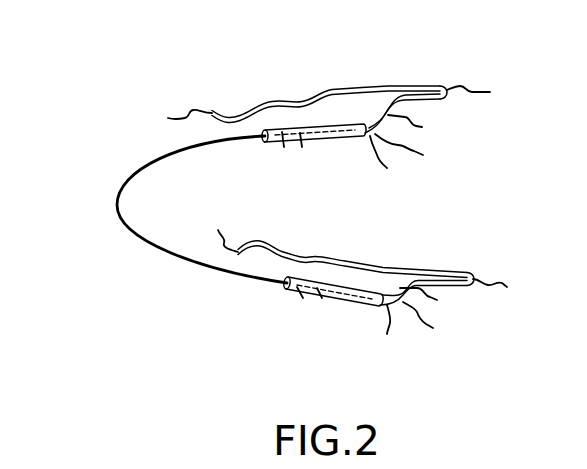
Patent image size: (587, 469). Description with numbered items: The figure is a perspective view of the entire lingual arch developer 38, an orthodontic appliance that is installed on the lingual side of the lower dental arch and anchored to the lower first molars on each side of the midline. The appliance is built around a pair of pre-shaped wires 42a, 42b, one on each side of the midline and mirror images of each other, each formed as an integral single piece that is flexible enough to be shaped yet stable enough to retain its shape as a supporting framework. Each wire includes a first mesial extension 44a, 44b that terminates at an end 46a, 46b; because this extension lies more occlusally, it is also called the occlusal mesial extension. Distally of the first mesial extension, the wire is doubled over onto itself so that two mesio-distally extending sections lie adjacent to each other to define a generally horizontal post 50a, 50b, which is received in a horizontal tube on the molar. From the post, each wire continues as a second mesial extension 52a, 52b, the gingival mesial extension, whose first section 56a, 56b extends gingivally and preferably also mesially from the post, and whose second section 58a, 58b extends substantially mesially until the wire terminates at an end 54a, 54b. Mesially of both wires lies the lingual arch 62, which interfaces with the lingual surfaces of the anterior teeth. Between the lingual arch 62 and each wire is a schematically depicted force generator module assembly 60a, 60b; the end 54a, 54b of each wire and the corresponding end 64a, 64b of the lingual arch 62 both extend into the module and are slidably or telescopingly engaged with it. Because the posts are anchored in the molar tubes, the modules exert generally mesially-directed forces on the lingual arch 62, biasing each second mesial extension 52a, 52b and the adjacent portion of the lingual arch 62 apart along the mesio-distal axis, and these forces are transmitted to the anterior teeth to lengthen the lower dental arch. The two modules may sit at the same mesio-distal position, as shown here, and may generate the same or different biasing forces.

The lingual arch developer 38 is at (117, 208).
The lingual arch 62 is at (130, 222).
The end of the lingual arch 64b is at (285, 140).
The end of the lingual arch 64a is at (290, 293).
The force generator module assembly 60b is at (294, 143).
The force generator module assembly 60a is at (327, 300).
The end of the wire 54b is at (309, 147).
The end of the wire 54a is at (313, 300).
The first mesial extension 44b is at (383, 88).
The first mesial extension 44a is at (413, 250).
The end of the first mesial extension 46b is at (175, 106).
The end of the first mesial extension 46a is at (216, 229).
The post 50b is at (447, 85).
The post 50a is at (477, 259).
The pre-shaped wire 42b is at (486, 90).
The pre-shaped wire 42a is at (508, 288).
The first section of the second mesial extension 56b is at (423, 123).
The first section of the second mesial extension 56a is at (435, 300).
The second mesial extension 52b is at (416, 151).
The second mesial extension 52a is at (435, 324).
The second section of the second mesial extension 58b is at (396, 161).
The second section of the second mesial extension 58a is at (405, 329).